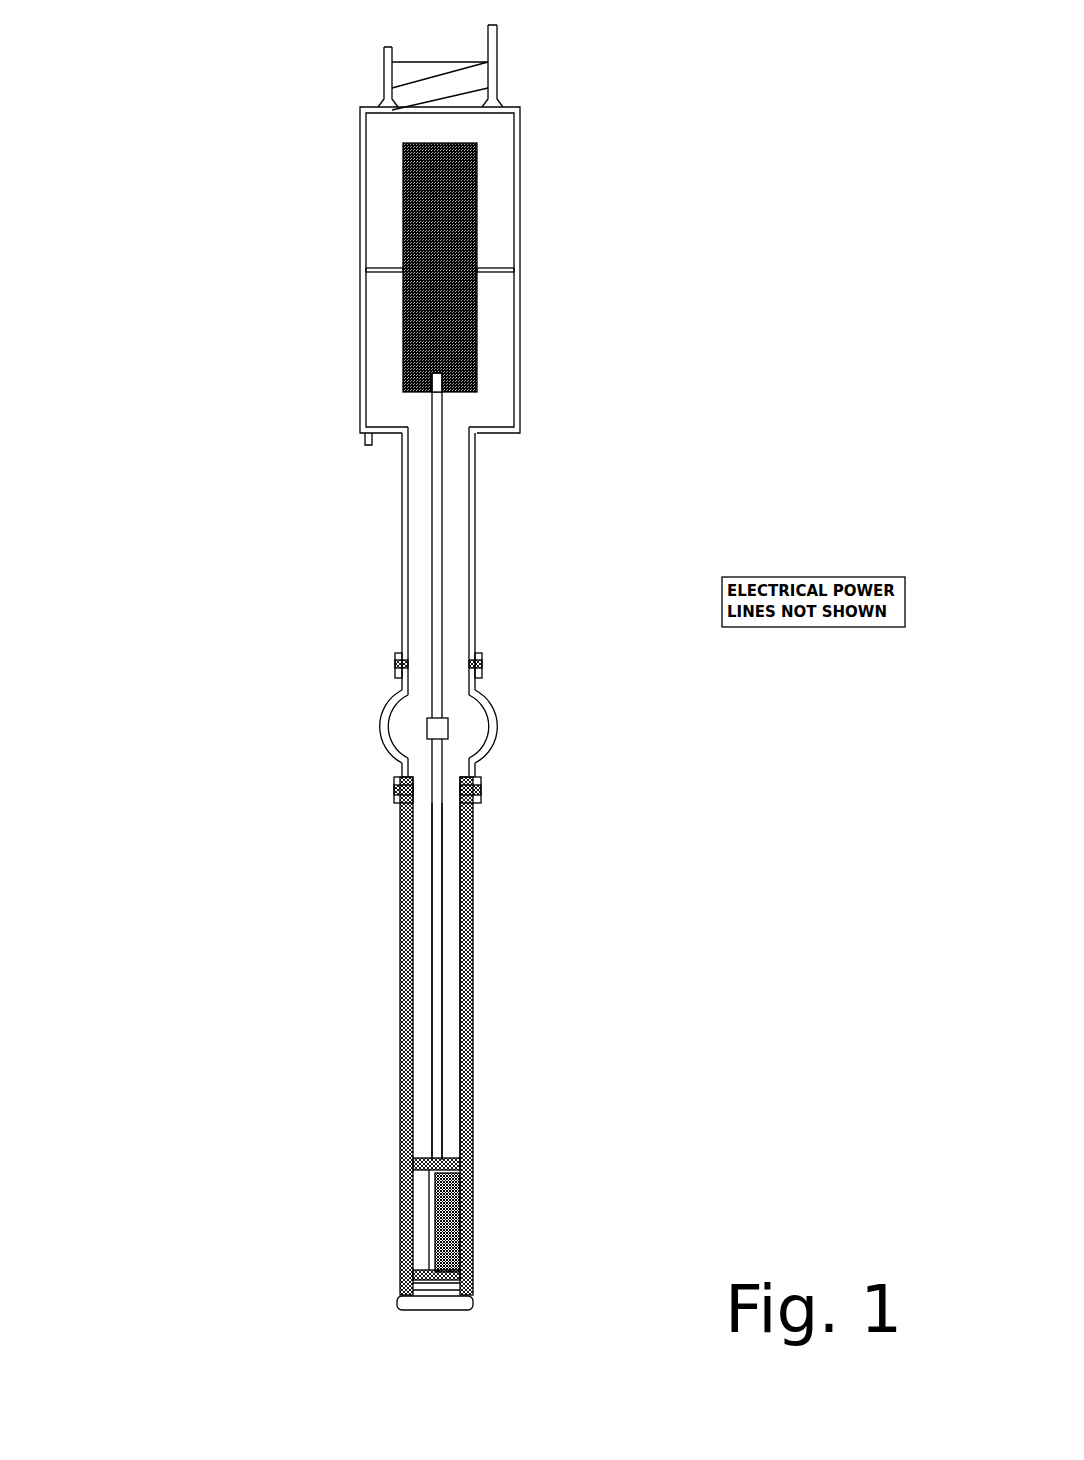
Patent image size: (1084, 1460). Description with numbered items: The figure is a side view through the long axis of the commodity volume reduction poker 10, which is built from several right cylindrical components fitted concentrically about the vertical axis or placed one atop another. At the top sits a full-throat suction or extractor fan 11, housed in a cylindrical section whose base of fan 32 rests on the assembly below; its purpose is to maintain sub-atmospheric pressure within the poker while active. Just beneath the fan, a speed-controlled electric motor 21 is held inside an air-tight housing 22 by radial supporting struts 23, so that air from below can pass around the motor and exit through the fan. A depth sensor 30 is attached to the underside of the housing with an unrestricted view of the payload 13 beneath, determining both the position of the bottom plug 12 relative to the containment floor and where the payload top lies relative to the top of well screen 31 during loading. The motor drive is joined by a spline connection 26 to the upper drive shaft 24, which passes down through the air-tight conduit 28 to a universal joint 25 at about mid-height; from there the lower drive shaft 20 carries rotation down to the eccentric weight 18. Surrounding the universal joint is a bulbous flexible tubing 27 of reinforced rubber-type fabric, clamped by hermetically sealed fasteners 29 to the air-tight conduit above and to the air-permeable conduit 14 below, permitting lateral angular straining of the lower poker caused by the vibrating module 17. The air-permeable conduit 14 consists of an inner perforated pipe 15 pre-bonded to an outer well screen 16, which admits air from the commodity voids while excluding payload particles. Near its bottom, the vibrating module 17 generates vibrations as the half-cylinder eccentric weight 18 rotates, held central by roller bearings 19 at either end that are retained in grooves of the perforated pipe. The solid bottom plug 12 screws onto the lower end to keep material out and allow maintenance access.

The poker 10 is at (888, 38).
The extractor fan 11 is at (462, 85).
The bottom plug 12 is at (427, 1311).
The payload 13 is at (117, 1082).
The air-permeable conduit 14 is at (428, 967).
The perforated pipe 15 is at (456, 1040).
The well screen 16 is at (476, 1000).
The vibrating module 17 is at (397, 1270).
The eccentric weight 18 is at (473, 1227).
The roller bearings 19 is at (472, 1160).
The lower drive shaft 20 is at (438, 910).
The electric motor 21 is at (418, 223).
The air-tight housing 22 is at (520, 276).
The supporting strut 23 is at (387, 281).
The upper drive shaft 24 is at (430, 618).
The universal joint 25 is at (450, 728).
The spline connection 26 is at (477, 385).
The flexible tubing 27 is at (381, 764).
The air-tight conduit 28 is at (476, 573).
The fasteners 29 is at (393, 673).
The depth sensor 30 is at (376, 452).
The top of well screen 31 is at (487, 802).
The base of fan 32 is at (471, 118).